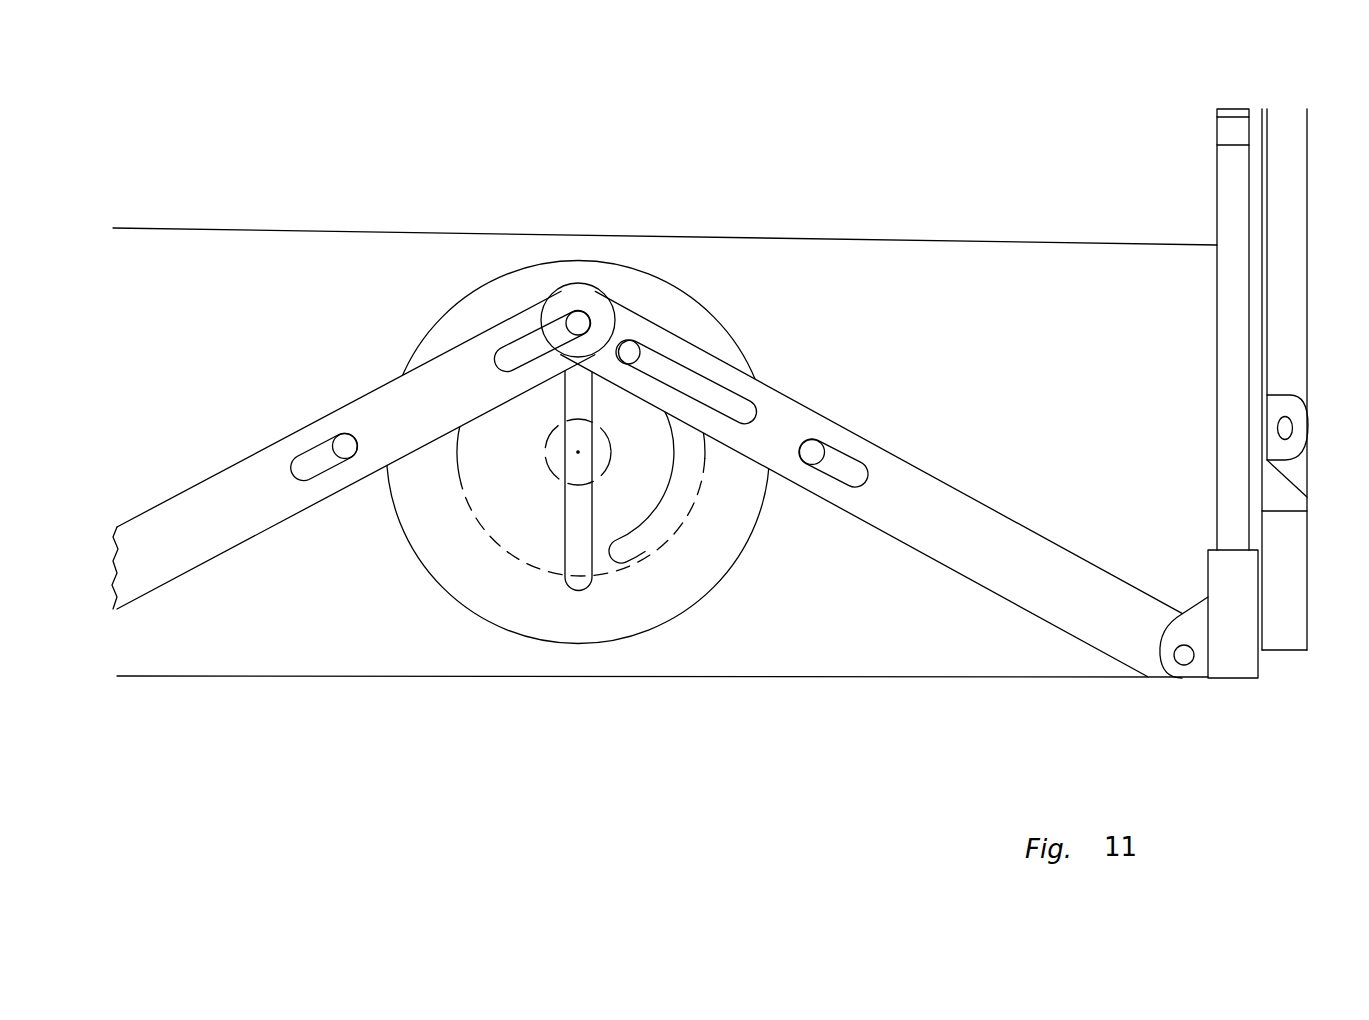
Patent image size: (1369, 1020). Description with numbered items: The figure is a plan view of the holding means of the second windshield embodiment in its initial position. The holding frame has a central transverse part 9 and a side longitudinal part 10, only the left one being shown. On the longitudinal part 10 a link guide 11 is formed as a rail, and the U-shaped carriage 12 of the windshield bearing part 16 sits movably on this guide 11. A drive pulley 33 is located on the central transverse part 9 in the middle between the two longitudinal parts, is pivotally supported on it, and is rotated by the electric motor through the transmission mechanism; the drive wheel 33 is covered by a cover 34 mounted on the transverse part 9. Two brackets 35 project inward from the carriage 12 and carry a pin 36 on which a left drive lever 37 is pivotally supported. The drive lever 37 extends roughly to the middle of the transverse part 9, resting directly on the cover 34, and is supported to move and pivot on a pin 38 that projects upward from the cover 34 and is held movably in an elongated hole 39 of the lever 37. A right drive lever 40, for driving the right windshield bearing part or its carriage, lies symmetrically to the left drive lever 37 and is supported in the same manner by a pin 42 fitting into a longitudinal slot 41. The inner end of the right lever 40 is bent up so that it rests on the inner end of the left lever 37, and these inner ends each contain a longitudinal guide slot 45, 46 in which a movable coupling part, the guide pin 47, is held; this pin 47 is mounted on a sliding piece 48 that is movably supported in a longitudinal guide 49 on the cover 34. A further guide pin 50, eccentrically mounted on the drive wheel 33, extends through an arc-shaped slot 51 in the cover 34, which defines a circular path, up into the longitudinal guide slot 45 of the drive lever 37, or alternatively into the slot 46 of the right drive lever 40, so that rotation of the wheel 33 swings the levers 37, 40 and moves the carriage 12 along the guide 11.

The central transverse part 9 is at (328, 637).
The longitudinal side part 10 is at (1217, 266).
The link guide 11 is at (1236, 198).
The carriage 12 is at (1232, 657).
The windshield bearing part 16 is at (1288, 533).
The drive pulley 33 is at (497, 548).
The cover 34 is at (426, 566).
The bracket 35 is at (1201, 680).
The pin 36 is at (1186, 657).
The left drive lever 37 is at (1068, 597).
The pin 38 is at (813, 452).
The elongated hole 39 is at (850, 472).
The right drive lever 40 is at (197, 537).
The longitudinal slot 41 is at (303, 468).
The pin 42 is at (343, 447).
The longitudinal guide slot 45 is at (704, 392).
The longitudinal guide slot 46 is at (530, 350).
The guide pin 47 is at (579, 323).
The sliding piece 48 is at (575, 283).
The longitudinal guide 49 is at (571, 554).
The guide pin 50 is at (628, 352).
The arc-shaped slot 51 is at (662, 520).